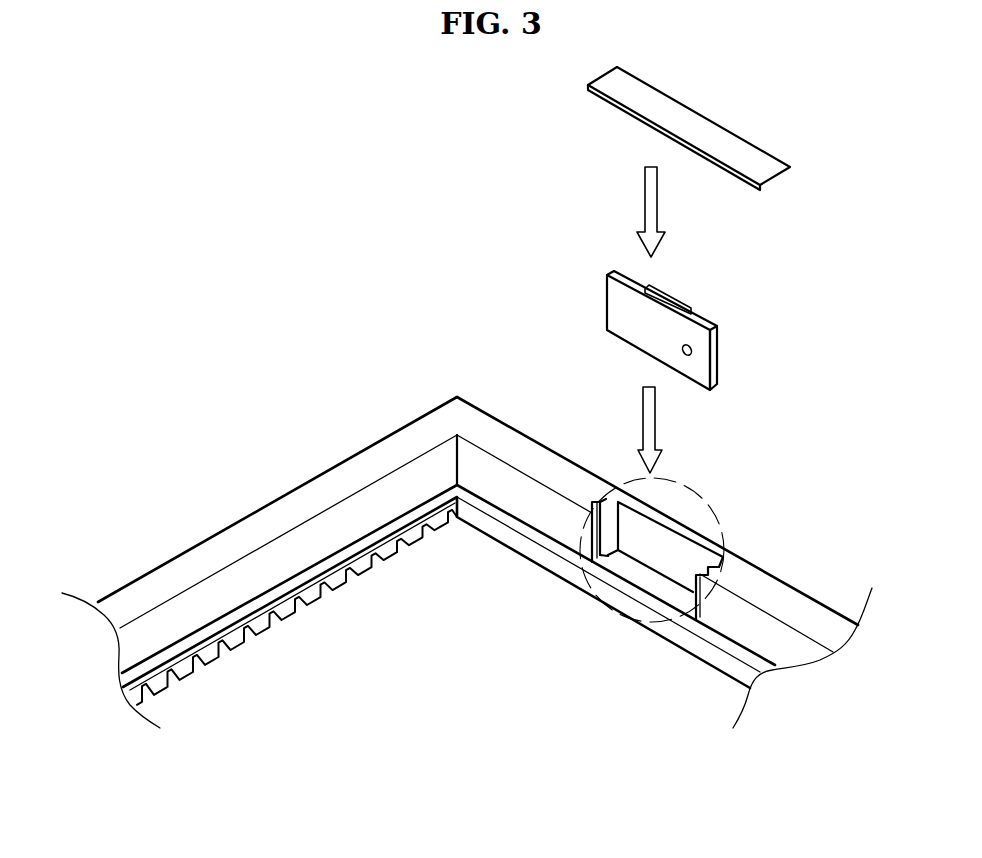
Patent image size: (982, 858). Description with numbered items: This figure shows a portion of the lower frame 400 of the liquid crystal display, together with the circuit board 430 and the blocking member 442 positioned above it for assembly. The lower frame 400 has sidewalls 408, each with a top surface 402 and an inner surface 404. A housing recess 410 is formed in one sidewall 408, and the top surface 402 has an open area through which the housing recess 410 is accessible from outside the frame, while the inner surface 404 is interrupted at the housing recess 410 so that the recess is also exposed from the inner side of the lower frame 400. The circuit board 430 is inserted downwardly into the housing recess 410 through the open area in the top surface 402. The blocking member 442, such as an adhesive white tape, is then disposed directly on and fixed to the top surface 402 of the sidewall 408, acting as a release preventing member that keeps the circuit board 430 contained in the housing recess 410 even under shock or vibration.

The lower frame 400 is at (778, 561).
The top surface 402 is at (540, 455).
The inner surface 404 is at (533, 502).
The sidewall 408 is at (384, 441).
The housing recess 410 is at (672, 490).
The circuit board 430 is at (691, 346).
The blocking member 442 is at (748, 157).